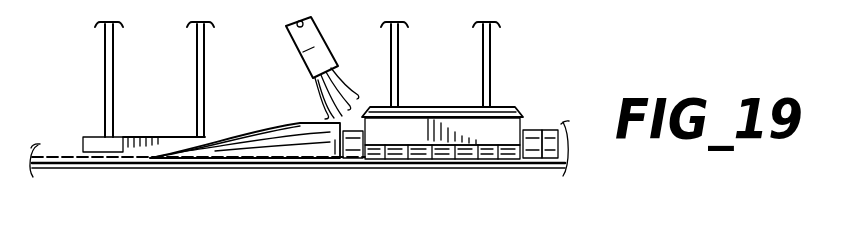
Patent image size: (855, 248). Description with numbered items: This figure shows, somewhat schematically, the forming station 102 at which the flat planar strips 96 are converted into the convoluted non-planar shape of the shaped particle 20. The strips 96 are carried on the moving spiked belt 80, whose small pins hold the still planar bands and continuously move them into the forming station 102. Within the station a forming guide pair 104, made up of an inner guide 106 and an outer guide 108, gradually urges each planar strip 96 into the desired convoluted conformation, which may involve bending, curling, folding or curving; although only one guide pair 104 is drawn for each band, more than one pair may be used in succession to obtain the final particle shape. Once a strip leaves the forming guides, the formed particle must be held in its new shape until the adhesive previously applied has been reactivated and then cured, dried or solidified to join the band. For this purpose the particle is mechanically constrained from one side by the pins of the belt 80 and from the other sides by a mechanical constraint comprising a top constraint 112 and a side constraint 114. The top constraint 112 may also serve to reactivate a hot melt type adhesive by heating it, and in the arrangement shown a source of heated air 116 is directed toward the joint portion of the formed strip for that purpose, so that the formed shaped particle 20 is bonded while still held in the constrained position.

The shaped particle 20 is at (556, 163).
The spiked transport belt 80 is at (324, 166).
The strip 96 is at (89, 160).
The forming station 102 is at (522, 85).
The forming guide pair 104 is at (184, 173).
The inner guide 106 is at (98, 143).
The outer guide 108 is at (247, 147).
The top constraint 112 is at (432, 108).
The side constraint 114 is at (422, 132).
The source of heated air 116 is at (301, 56).